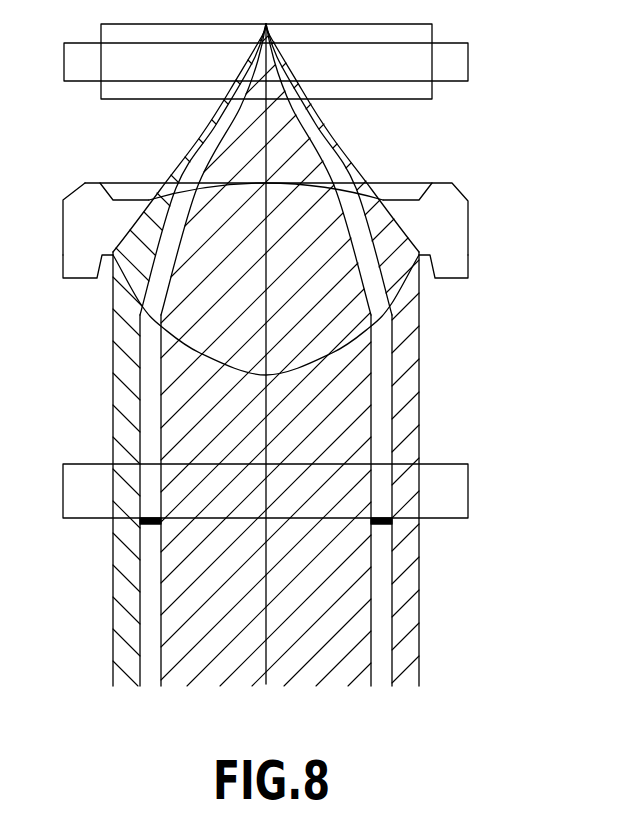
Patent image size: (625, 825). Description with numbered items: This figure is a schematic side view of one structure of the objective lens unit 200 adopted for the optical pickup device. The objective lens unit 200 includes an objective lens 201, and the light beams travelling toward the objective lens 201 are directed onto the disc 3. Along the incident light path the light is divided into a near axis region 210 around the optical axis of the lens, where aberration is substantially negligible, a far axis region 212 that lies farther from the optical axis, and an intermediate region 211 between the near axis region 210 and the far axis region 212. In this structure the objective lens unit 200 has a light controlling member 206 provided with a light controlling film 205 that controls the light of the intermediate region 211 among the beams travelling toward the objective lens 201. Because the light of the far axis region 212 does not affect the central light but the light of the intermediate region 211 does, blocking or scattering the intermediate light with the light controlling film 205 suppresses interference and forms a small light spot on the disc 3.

The disc 3 is at (458, 69).
The objective lens unit 200 is at (468, 222).
The objective lens 201 is at (468, 256).
The light controlling film 205 is at (392, 522).
The light controlling member 206 is at (468, 496).
The near axis region 210 is at (371, 689).
The intermediate region 211 is at (161, 689).
The far axis region 212 is at (140, 689).